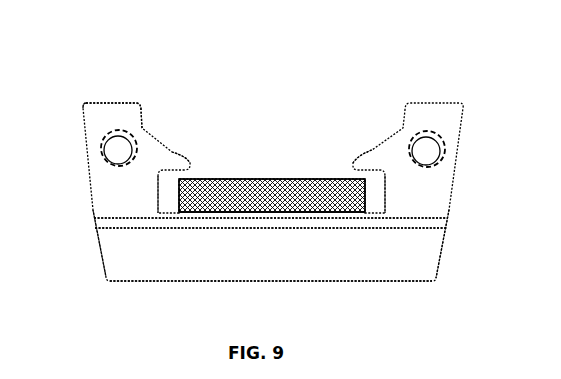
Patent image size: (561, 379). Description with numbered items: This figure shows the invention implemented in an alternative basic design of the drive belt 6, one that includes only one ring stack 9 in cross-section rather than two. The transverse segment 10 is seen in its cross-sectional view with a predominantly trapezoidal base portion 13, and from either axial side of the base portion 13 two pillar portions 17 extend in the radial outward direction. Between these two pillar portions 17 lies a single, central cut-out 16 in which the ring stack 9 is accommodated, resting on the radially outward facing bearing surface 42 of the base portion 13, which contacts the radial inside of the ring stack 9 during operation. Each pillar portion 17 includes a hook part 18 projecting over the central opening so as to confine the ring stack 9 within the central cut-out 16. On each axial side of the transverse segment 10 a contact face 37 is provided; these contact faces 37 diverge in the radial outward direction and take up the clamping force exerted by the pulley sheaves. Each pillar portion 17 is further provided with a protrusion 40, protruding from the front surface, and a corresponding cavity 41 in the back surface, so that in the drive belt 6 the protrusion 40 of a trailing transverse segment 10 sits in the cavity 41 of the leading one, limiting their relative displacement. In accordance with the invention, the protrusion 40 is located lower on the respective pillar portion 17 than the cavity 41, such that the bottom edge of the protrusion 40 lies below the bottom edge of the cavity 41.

The drive belt 6 is at (192, 76).
The ring stack 9 is at (232, 175).
The transverse segment 10 is at (110, 100).
The base portion 13 is at (263, 265).
The central cut-out 16 is at (262, 174).
The pillar portion 17 is at (109, 201).
The hook part 18 is at (177, 160).
The contact face 37 is at (98, 258).
The protrusion 40 is at (103, 160).
The cavity 41 is at (100, 142).
The bearing surface 42 is at (333, 218).